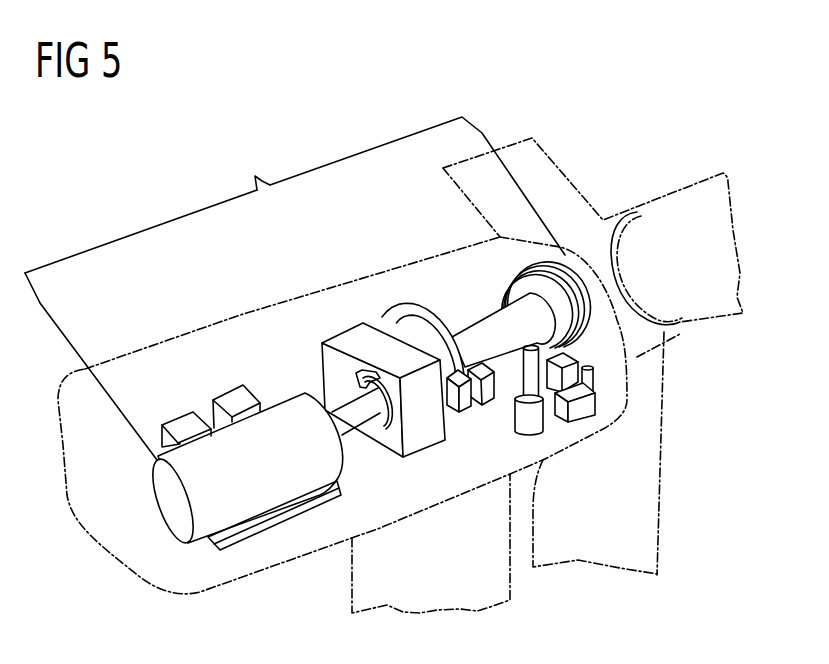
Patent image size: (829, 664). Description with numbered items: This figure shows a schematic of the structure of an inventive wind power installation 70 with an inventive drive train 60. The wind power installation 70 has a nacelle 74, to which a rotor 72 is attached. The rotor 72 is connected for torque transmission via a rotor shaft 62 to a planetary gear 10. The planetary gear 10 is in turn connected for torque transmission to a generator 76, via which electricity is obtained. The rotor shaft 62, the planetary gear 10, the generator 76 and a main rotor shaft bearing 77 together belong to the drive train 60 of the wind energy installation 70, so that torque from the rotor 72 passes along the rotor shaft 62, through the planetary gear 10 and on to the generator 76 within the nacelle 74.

The planetary gear 10 is at (412, 310).
The drive train 60 is at (252, 162).
The rotor shaft 62 is at (477, 337).
The wind power installation 70 is at (188, 270).
The rotor 72 is at (658, 470).
The nacelle 74 is at (340, 283).
The generator 76 is at (177, 508).
The main rotor shaft bearing 77 is at (583, 310).